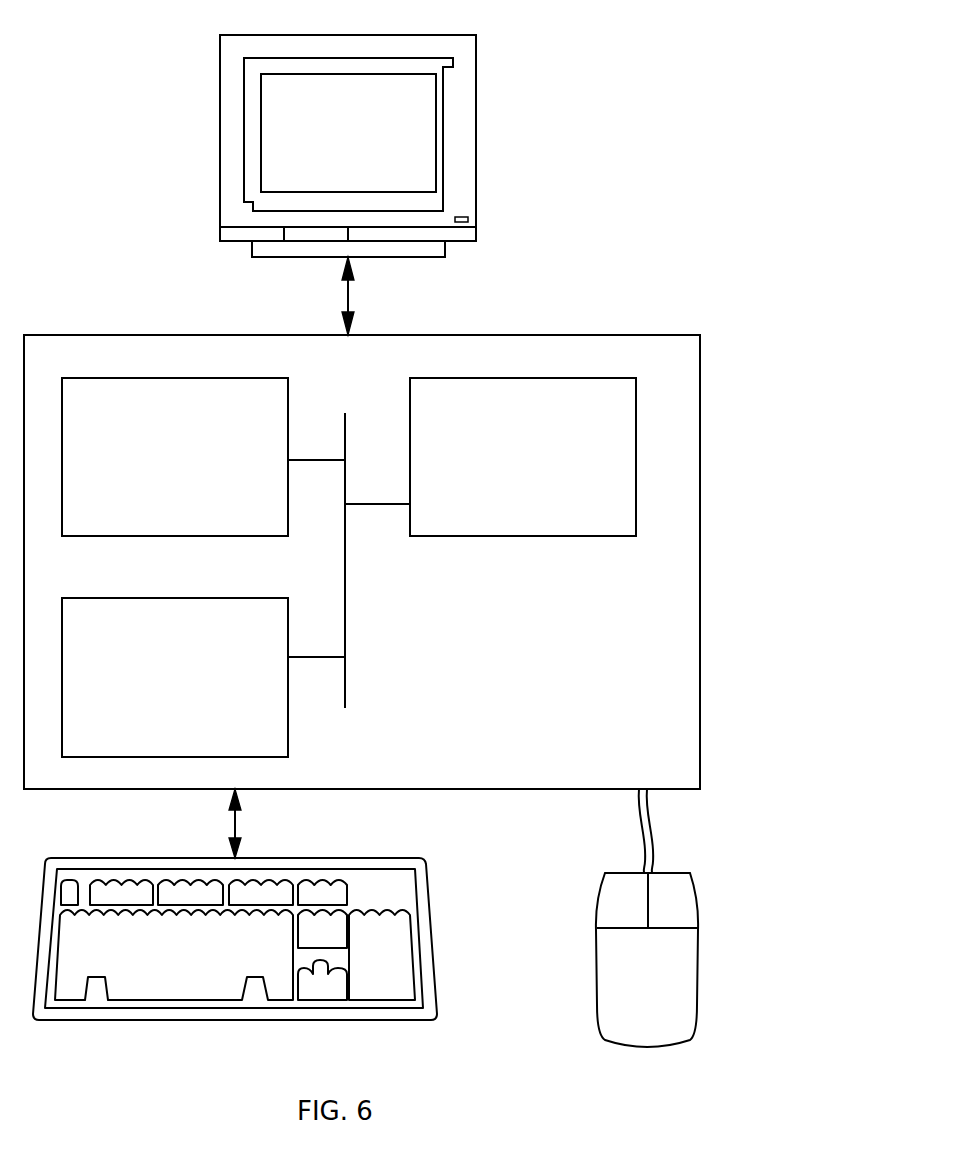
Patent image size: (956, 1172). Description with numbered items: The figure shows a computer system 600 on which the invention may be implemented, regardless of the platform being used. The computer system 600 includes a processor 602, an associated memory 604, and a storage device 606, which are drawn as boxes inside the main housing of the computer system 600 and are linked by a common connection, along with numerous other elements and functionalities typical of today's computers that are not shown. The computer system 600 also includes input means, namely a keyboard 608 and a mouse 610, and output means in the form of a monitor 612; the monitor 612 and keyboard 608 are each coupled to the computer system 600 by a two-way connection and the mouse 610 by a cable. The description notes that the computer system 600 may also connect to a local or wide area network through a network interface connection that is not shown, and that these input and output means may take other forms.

The computer system 600 is at (680, 203).
The processor 602 is at (503, 474).
The memory 604 is at (155, 484).
The storage device 606 is at (155, 719).
The keyboard 608 is at (153, 981).
The mouse 610 is at (627, 999).
The monitor 612 is at (328, 164).